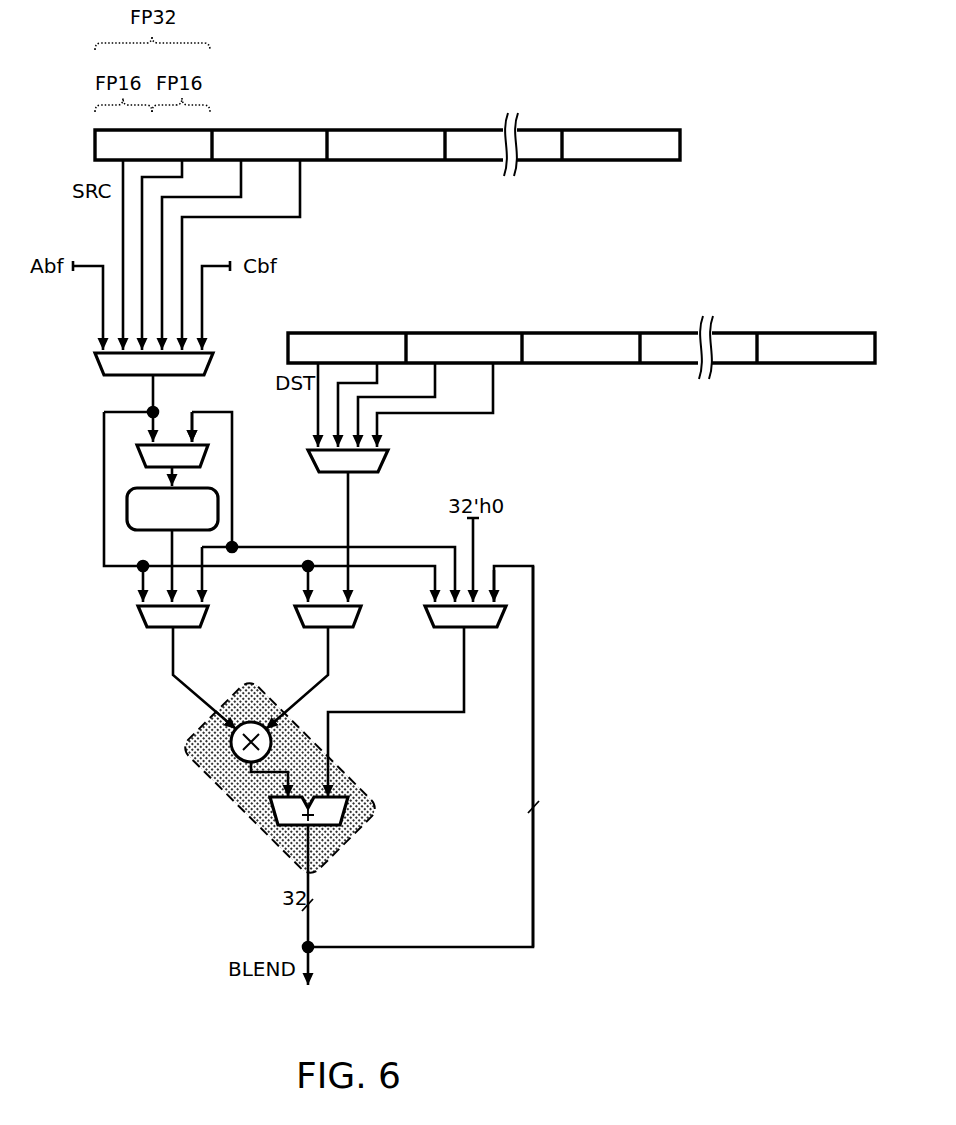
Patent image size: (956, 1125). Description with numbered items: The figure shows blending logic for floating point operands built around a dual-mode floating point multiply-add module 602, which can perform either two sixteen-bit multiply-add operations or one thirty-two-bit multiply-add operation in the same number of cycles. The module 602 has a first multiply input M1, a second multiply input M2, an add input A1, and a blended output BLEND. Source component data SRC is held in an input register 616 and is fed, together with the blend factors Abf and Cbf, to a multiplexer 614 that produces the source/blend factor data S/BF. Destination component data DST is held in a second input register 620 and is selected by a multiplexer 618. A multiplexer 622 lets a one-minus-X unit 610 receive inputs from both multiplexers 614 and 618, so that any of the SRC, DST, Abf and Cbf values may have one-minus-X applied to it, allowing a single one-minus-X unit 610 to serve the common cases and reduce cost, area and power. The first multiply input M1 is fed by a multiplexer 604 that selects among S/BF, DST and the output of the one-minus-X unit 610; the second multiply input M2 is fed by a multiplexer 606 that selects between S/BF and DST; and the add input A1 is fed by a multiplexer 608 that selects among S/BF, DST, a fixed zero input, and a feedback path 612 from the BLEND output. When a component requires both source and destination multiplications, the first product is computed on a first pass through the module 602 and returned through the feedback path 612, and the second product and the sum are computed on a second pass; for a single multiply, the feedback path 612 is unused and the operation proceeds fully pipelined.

The dual-mode floating point multiply-add module 602 is at (247, 817).
The multiplexer 604 is at (140, 620).
The multiplexer 606 is at (297, 620).
The multiplexer 608 is at (428, 620).
The 1-X unit 610 is at (218, 512).
The feedback path 612 is at (535, 660).
The multiplexer 614 is at (96, 370).
The input register 616 is at (298, 128).
The multiplexer 618 is at (388, 462).
The input register 620 is at (490, 333).
The multiplexer 622 is at (208, 455).